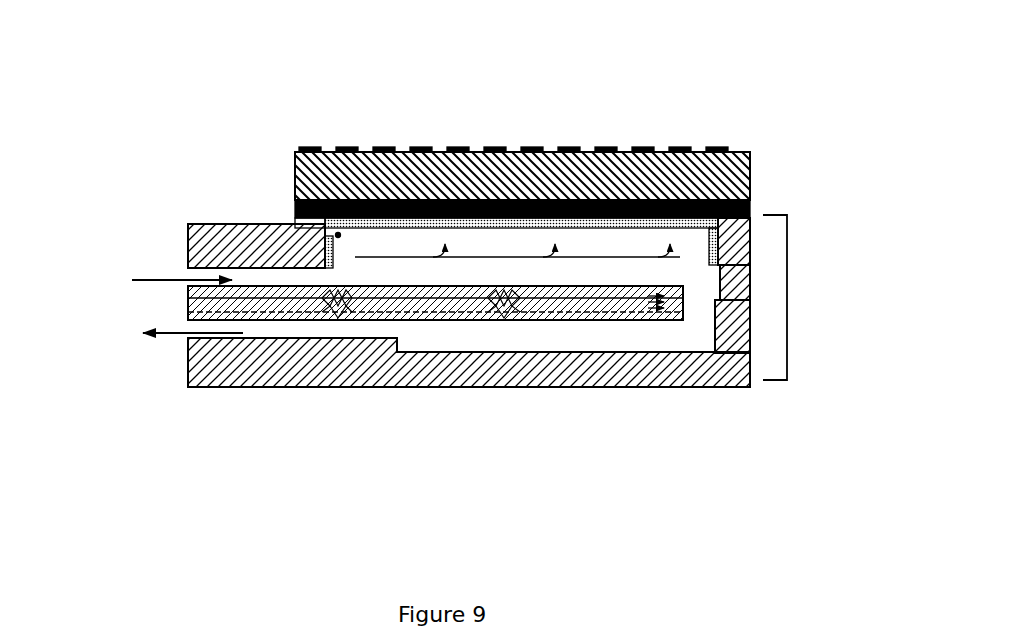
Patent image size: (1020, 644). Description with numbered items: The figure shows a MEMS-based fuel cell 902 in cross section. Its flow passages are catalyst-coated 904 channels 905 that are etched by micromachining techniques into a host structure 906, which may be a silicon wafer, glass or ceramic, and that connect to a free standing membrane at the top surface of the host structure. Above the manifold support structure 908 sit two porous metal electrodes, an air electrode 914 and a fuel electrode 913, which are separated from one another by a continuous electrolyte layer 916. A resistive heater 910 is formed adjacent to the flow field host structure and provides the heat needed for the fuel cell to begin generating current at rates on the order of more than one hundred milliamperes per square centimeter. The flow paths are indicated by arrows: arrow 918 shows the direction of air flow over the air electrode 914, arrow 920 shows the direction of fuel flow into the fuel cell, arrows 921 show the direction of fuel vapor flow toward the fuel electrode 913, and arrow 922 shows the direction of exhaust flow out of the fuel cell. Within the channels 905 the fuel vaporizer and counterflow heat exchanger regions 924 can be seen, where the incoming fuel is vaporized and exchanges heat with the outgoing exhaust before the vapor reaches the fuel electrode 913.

The MEMS-based fuel cell 902 is at (135, 97).
The catalyst coating 904 is at (699, 233).
The channels 905 is at (365, 244).
The host structure 906 is at (182, 240).
The manifold support structure 908 is at (800, 292).
The resistive heater 910 is at (444, 316).
The fuel electrode 913 is at (757, 193).
The air electrode 914 is at (692, 128).
The continuous electrolyte layer 916 is at (292, 168).
The arrow indicating direction of air flow 918 is at (493, 130).
The arrow indicating direction of fuel flow 920 is at (159, 281).
The arrows indicating direction of fuel vapor flow 921 is at (517, 262).
The arrow indicating direction of exhaust flow 922 is at (167, 341).
The fuel vaporizer and counterflow heat exchanger regions 924 is at (275, 283).